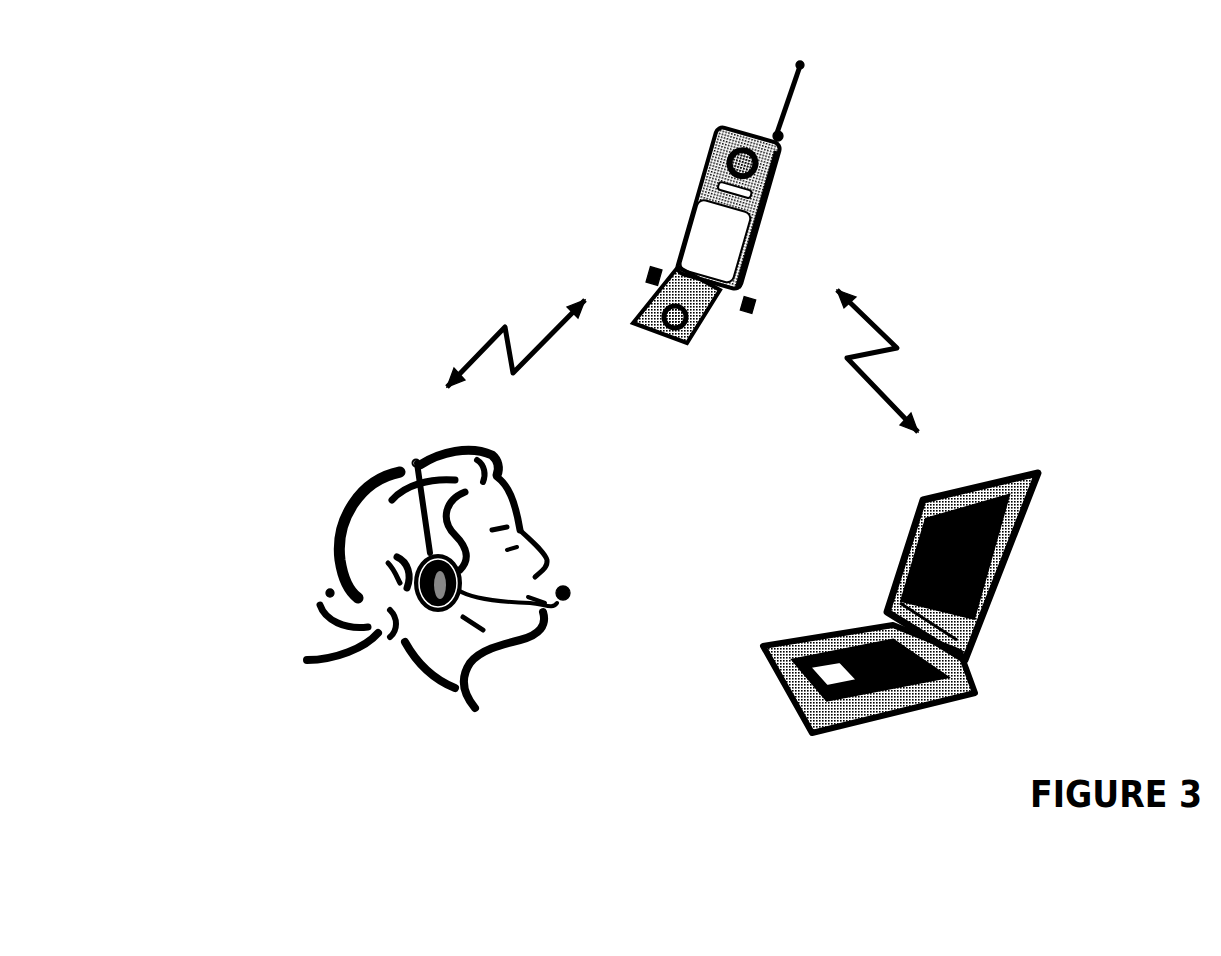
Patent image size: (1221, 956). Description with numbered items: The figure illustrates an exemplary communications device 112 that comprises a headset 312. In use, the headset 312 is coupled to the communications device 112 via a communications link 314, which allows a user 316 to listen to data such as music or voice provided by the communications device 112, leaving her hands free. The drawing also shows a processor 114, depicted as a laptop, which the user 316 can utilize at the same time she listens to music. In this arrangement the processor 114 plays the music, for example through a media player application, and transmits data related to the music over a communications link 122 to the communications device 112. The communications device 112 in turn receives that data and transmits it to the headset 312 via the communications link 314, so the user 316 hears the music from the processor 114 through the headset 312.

The communications device 112 is at (655, 147).
The processor 114 is at (1025, 432).
The communications link 122 is at (873, 280).
The headset 312 is at (428, 575).
The communications link 314 is at (495, 280).
The user 316 is at (305, 538).